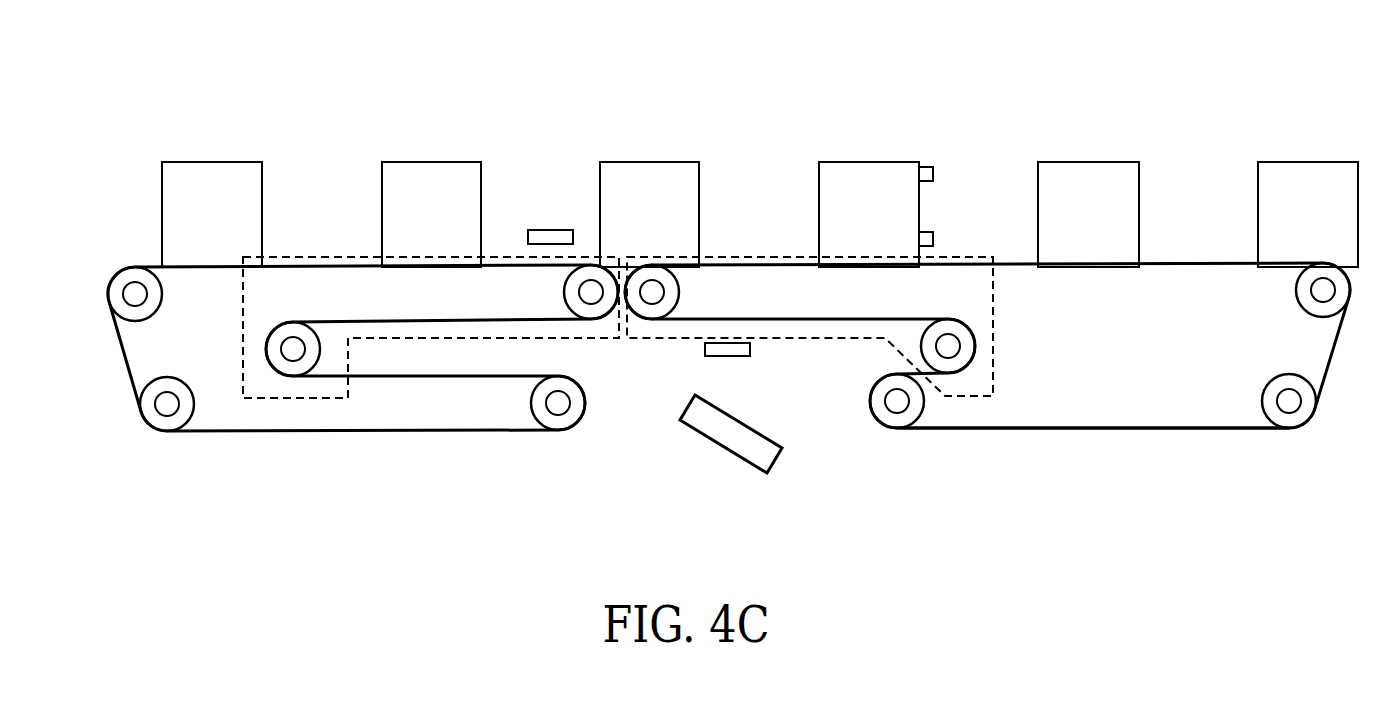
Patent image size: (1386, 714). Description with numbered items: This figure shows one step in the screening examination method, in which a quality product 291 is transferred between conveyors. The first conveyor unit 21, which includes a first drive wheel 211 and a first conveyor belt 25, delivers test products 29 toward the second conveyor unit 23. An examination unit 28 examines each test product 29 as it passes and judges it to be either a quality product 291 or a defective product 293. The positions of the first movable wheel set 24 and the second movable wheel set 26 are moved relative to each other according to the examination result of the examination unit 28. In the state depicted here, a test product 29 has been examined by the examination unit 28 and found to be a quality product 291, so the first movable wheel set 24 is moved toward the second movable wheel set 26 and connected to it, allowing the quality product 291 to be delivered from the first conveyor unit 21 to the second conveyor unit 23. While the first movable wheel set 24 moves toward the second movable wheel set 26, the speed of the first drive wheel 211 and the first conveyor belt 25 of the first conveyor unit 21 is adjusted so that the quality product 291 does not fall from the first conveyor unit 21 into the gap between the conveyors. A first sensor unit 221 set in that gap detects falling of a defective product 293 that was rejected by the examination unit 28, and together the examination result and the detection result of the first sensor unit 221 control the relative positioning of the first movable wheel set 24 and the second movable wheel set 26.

The first conveyor unit 21 is at (1167, 468).
The first drive wheel 211 is at (890, 420).
The first sensor unit 221 is at (705, 350).
The second conveyor unit 23 is at (313, 458).
The first movable wheel set 24 is at (793, 332).
The first conveyor belt 25 is at (1093, 430).
The second movable wheel set 26 is at (600, 338).
The examination unit 28 is at (925, 160).
The test product 29 is at (894, 141).
The quality product 291 is at (850, 170).
The defective product 293 is at (708, 430).